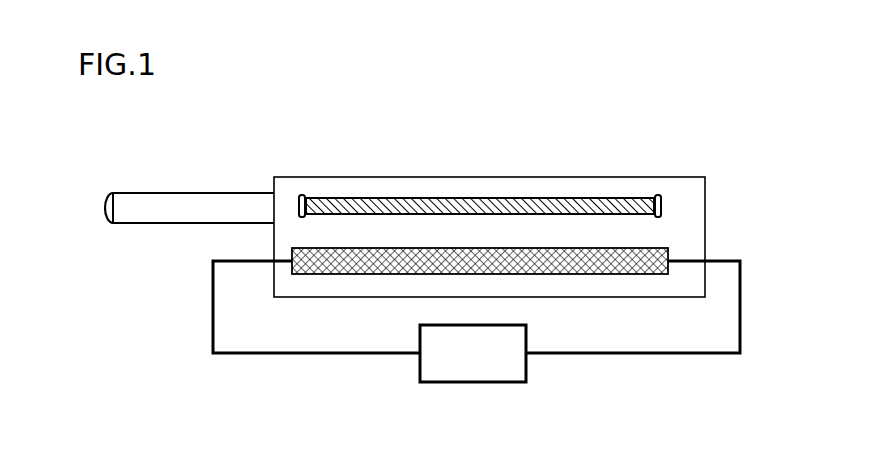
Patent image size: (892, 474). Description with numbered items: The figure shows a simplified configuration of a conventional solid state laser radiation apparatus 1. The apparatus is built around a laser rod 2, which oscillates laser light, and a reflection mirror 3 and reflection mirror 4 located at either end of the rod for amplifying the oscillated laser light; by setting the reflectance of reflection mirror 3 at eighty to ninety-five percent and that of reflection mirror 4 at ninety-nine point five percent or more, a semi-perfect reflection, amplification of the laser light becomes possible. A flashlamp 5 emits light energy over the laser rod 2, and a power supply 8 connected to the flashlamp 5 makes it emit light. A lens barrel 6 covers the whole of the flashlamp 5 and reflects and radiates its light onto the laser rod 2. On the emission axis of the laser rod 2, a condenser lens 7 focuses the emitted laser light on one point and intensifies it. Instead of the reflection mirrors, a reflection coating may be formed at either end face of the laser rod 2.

The solid state laser radiation apparatus 1 is at (609, 106).
The laser rod 2 is at (468, 198).
The reflection mirror 3 is at (301, 197).
The reflection mirror 4 is at (657, 197).
The flashlamp 5 is at (596, 260).
The lens barrel 6 is at (385, 177).
The condenser lens 7 is at (107, 202).
The power supply 8 is at (489, 373).